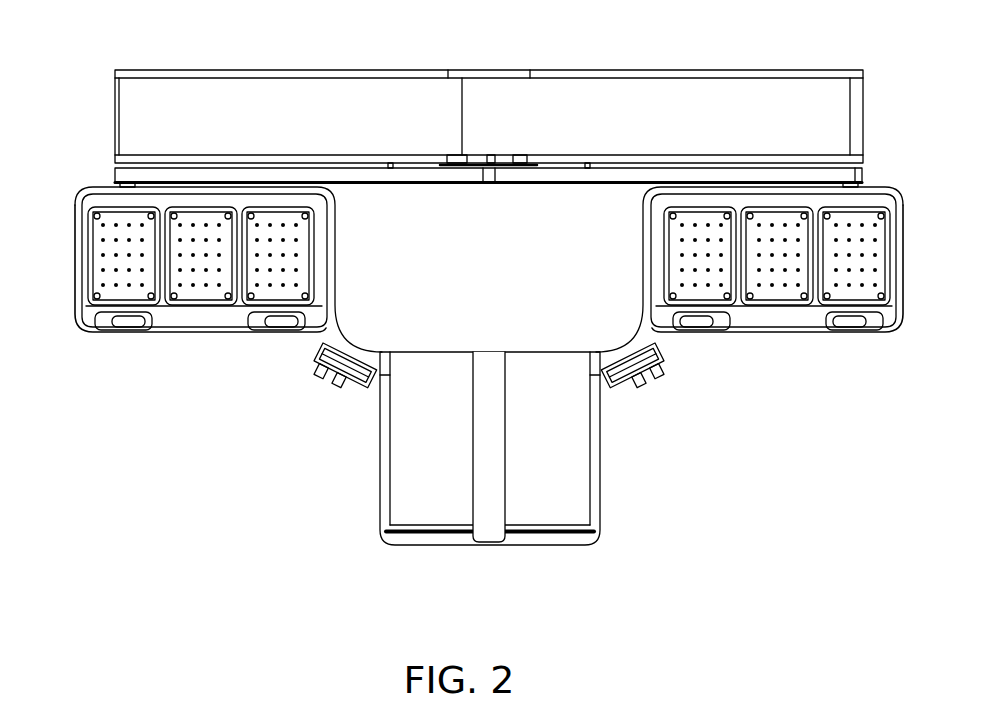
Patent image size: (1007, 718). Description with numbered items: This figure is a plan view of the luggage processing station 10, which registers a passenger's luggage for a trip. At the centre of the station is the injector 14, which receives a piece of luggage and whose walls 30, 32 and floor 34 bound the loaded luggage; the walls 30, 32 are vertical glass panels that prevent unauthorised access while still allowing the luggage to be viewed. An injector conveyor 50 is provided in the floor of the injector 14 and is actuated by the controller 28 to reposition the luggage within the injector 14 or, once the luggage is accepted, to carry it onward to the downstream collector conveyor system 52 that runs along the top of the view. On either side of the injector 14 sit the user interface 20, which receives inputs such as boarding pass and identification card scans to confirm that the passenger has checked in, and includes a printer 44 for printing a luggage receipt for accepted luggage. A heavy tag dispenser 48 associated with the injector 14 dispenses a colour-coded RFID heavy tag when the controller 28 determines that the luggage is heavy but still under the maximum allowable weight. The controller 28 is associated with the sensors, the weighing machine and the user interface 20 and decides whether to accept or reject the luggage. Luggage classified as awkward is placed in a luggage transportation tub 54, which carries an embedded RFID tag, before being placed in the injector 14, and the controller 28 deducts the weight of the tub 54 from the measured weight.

The processing station 10 is at (488, 309).
The injector 14 is at (489, 471).
The user interface 20 is at (488, 365).
The controller 28 is at (302, 359).
The wall 30 is at (463, 540).
The wall 32 is at (427, 537).
The floor 34 is at (413, 424).
The printer 44 is at (318, 381).
The heavy tag dispenser 48 is at (337, 391).
The injector conveyor 50 is at (403, 487).
The collector conveyor system 52 is at (656, 107).
The luggage transportation tub 54 is at (100, 262).